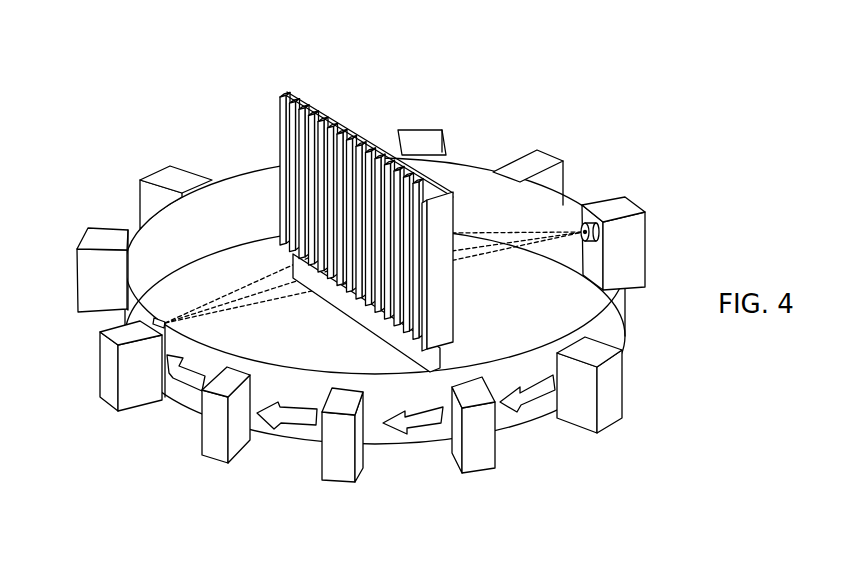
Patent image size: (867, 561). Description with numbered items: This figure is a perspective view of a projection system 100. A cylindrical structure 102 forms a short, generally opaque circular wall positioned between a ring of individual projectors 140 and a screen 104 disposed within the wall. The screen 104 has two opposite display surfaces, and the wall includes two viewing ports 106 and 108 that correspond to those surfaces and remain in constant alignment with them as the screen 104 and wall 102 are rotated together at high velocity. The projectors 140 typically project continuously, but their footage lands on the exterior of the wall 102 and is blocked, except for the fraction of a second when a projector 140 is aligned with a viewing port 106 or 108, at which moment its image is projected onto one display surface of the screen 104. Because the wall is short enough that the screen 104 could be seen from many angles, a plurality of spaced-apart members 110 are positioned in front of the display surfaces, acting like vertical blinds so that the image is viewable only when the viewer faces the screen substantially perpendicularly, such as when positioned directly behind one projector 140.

The projection system 100 is at (186, 77).
The cylindrical structure 102 is at (375, 341).
The screen 104 is at (346, 192).
The viewing port 106 is at (541, 160).
The viewing port 108 is at (306, 285).
The spaced-apart members 110 is at (475, 271).
The projectors 140 is at (392, 306).